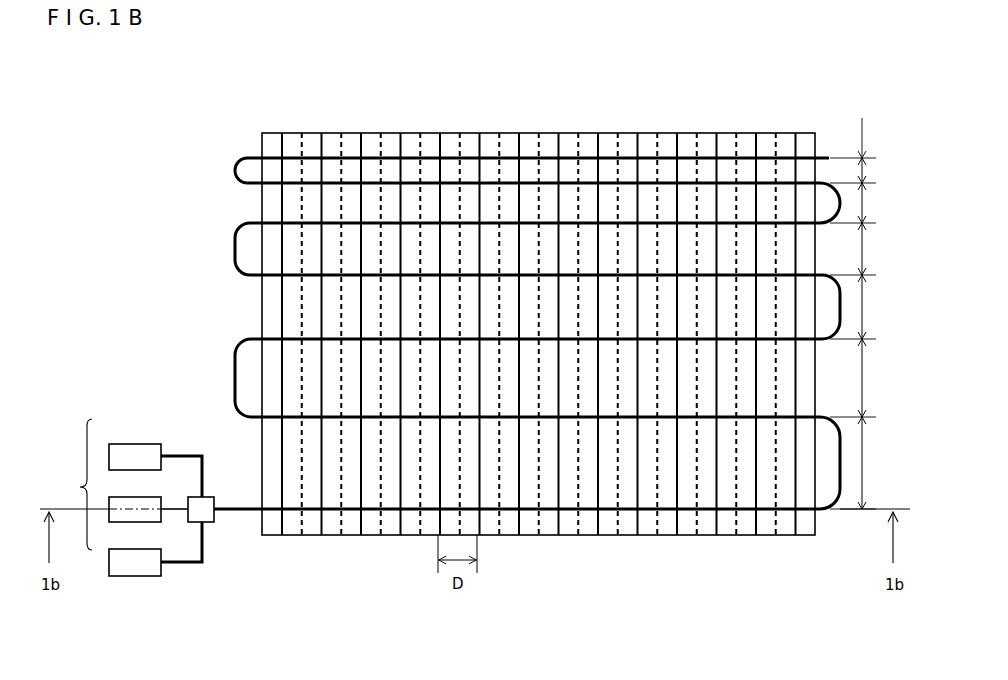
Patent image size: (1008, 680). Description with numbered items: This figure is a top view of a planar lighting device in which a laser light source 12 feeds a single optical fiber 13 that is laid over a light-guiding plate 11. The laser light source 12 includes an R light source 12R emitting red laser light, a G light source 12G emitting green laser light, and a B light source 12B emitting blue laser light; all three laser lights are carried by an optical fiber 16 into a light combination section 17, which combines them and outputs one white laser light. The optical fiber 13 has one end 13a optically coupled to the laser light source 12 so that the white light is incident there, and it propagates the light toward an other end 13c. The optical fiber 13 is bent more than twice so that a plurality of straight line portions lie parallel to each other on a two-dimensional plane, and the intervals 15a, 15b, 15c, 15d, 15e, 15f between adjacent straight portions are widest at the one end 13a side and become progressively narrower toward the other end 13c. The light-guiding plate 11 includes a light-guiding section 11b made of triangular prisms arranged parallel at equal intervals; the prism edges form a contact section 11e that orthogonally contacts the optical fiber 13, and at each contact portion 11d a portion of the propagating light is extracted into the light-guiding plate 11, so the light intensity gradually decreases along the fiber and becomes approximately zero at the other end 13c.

The light-guiding plate 11 is at (261, 144).
The light-guiding section 11b is at (693, 518).
The contact portion 11d is at (717, 480).
The contact section 11e is at (755, 508).
The laser light source 12 is at (74, 484).
The R light source 12R is at (152, 444).
The G light source 12G is at (152, 497).
The B light source 12B is at (152, 549).
The optical fiber 13 is at (238, 351).
The one end 13a is at (218, 512).
The other end 13c is at (829, 152).
The interval 15a is at (881, 463).
The interval 15b is at (881, 378).
The interval 15c is at (880, 307).
The interval 15d is at (881, 249).
The interval 15e is at (881, 203).
The interval 15f is at (879, 170).
The optical fiber 16 is at (185, 563).
The light combination section 17 is at (207, 497).